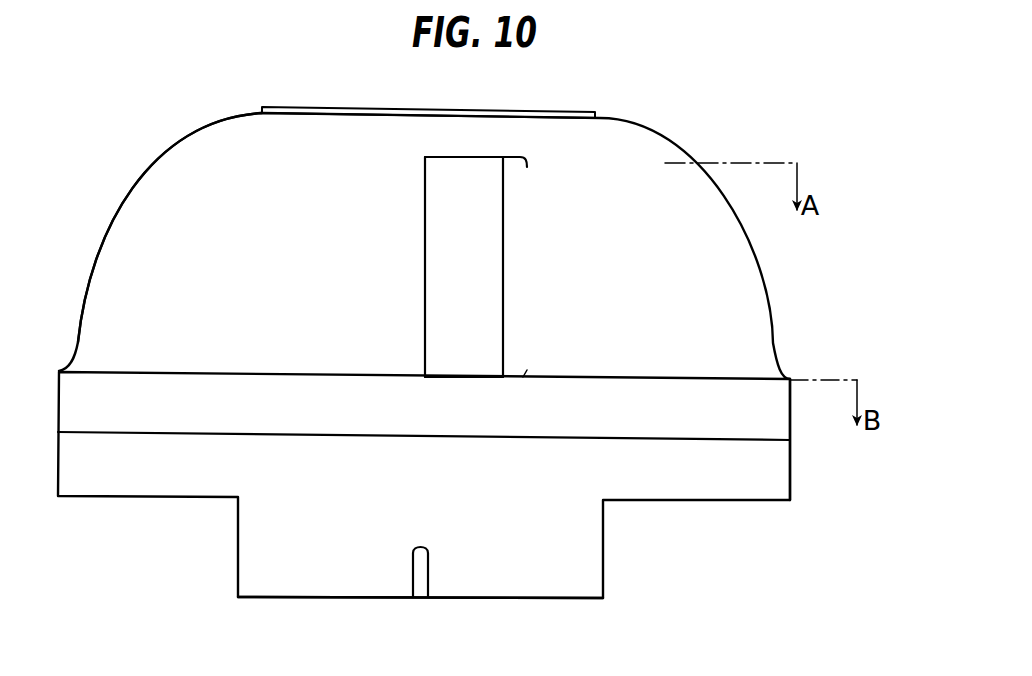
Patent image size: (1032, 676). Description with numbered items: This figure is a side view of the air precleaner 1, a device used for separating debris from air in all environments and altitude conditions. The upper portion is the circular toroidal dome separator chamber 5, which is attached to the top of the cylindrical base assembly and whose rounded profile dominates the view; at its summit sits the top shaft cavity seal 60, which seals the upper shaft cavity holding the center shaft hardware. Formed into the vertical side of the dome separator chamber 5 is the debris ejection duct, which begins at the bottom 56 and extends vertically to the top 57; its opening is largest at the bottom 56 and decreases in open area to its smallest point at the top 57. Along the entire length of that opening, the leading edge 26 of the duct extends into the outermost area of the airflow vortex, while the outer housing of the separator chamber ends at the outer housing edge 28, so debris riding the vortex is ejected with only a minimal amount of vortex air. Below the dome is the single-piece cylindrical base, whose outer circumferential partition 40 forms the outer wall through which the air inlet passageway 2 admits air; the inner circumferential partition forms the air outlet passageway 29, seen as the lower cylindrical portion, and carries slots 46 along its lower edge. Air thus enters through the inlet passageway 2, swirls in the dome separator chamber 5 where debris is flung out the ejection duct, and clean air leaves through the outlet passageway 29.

The air precleaner 1 is at (143, 170).
The circular toroidal dome separator chamber 5 is at (94, 251).
The top shaft cavity seal 60 is at (573, 106).
The circular toroidal dome separator chamber outer housing edge 28 is at (421, 288).
The leading edge of the debris ejection duct 26 is at (506, 288).
The top of the debris ejection duct 57 is at (508, 163).
The bottom of the debris ejection duct 56 is at (467, 383).
The air inlet passageway 2 is at (725, 506).
The outer circumferential partition 40 is at (798, 422).
The air outlet passageway 29 is at (504, 614).
The slots 46 is at (430, 584).